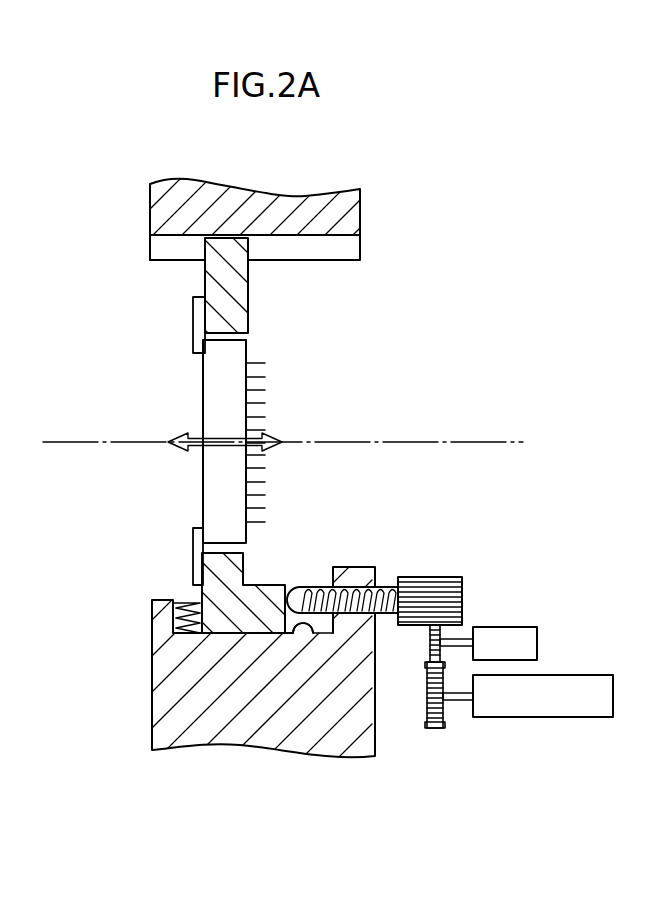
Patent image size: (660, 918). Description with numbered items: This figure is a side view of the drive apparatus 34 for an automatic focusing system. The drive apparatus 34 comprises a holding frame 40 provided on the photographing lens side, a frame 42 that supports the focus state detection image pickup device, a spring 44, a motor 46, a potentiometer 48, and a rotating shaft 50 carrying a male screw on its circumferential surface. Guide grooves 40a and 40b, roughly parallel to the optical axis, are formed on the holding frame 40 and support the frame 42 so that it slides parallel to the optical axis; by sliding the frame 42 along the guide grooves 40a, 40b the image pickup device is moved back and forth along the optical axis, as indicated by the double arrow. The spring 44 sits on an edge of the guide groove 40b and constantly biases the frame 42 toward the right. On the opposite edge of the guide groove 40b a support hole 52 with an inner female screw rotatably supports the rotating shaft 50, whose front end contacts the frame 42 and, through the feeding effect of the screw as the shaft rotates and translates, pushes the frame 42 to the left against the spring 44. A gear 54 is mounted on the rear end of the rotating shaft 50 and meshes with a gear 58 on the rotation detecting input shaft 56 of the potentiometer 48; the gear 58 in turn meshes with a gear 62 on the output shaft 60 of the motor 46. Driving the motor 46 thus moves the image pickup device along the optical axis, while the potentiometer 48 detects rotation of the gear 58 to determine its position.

The drive apparatus 34 is at (414, 402).
The holding frame 40 is at (360, 210).
The guide groove 40a is at (360, 247).
The guide groove 40b is at (301, 630).
The frame 42 is at (205, 275).
The spring 44 is at (182, 602).
The motor 46 is at (545, 717).
The potentiometer 48 is at (527, 632).
The rotating shaft 50 is at (324, 585).
The support hole 52 is at (367, 587).
The gear 54 is at (440, 577).
The rotation detecting input shaft 56 is at (462, 639).
The gear 58 is at (426, 665).
The output shaft 60 is at (455, 700).
The gear 62 is at (432, 728).